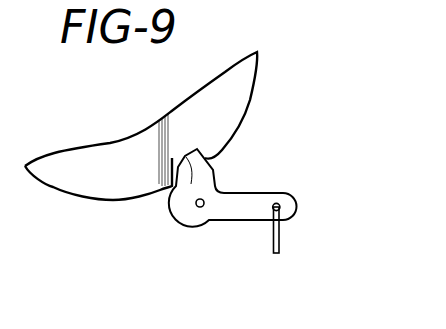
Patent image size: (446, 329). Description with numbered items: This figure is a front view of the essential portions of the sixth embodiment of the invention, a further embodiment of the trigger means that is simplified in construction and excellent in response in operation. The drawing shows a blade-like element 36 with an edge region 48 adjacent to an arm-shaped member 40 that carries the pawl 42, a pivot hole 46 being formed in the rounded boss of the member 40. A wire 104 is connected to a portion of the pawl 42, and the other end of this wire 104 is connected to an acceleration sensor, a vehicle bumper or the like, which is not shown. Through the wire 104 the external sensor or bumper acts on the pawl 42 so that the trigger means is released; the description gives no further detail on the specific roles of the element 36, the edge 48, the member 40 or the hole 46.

The blade 36 is at (113, 197).
The blade edge cross-section 48 is at (164, 172).
The arm bracket 40 is at (233, 172).
The pawl 42 is at (234, 218).
The pivot hole 46 is at (200, 208).
The wire 104 is at (279, 242).